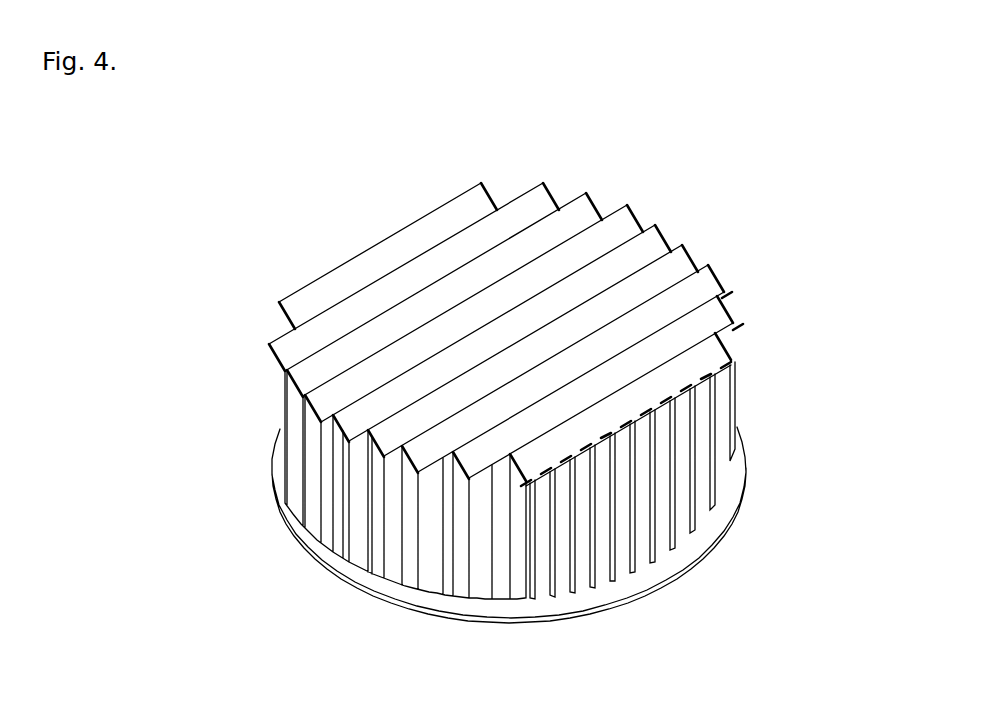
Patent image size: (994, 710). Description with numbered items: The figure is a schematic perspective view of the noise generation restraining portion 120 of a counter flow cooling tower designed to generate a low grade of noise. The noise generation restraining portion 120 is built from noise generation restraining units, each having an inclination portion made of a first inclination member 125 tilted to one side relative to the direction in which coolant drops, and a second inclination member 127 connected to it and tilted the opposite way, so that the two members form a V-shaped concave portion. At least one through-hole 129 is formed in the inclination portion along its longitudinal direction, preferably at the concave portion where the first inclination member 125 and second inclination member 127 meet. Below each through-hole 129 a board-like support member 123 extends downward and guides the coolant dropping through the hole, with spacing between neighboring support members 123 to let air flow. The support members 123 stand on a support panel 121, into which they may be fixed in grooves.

The noise generation restraining portion 120 is at (218, 242).
The support panel 121 is at (647, 594).
The support member 123 is at (480, 595).
The first inclination member 125 is at (349, 258).
The second inclination member 127 is at (738, 371).
The through-hole 129 is at (694, 397).